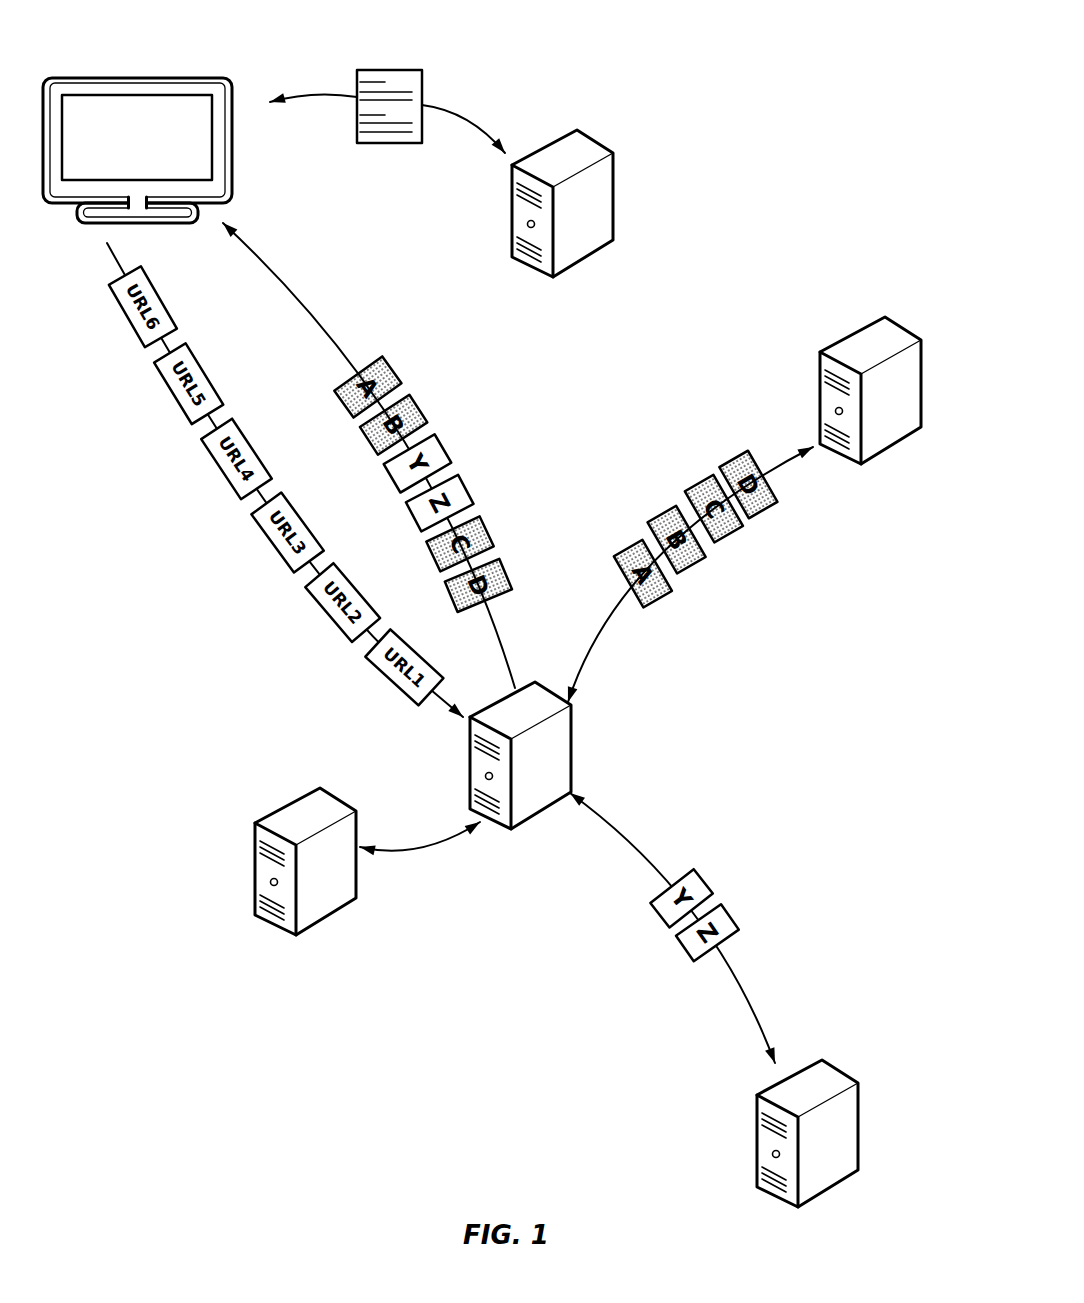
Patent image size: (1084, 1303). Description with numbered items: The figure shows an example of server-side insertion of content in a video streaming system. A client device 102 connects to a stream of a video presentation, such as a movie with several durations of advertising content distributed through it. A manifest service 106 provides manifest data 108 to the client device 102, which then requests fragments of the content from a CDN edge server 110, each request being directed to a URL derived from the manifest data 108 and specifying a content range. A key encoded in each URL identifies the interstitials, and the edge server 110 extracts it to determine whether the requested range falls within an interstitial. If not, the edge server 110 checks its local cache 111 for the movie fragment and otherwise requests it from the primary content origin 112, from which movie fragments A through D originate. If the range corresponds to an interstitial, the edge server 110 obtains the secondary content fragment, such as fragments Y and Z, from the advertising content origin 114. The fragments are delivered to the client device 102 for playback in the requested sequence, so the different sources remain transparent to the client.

The client device 102 is at (195, 78).
The manifest service 106 is at (588, 137).
The manifest data 108 is at (365, 70).
The CDN edge server 110 is at (505, 825).
The local cache 111 is at (337, 797).
The primary content origin 112 is at (880, 317).
The advertising content origin 114 is at (826, 1061).